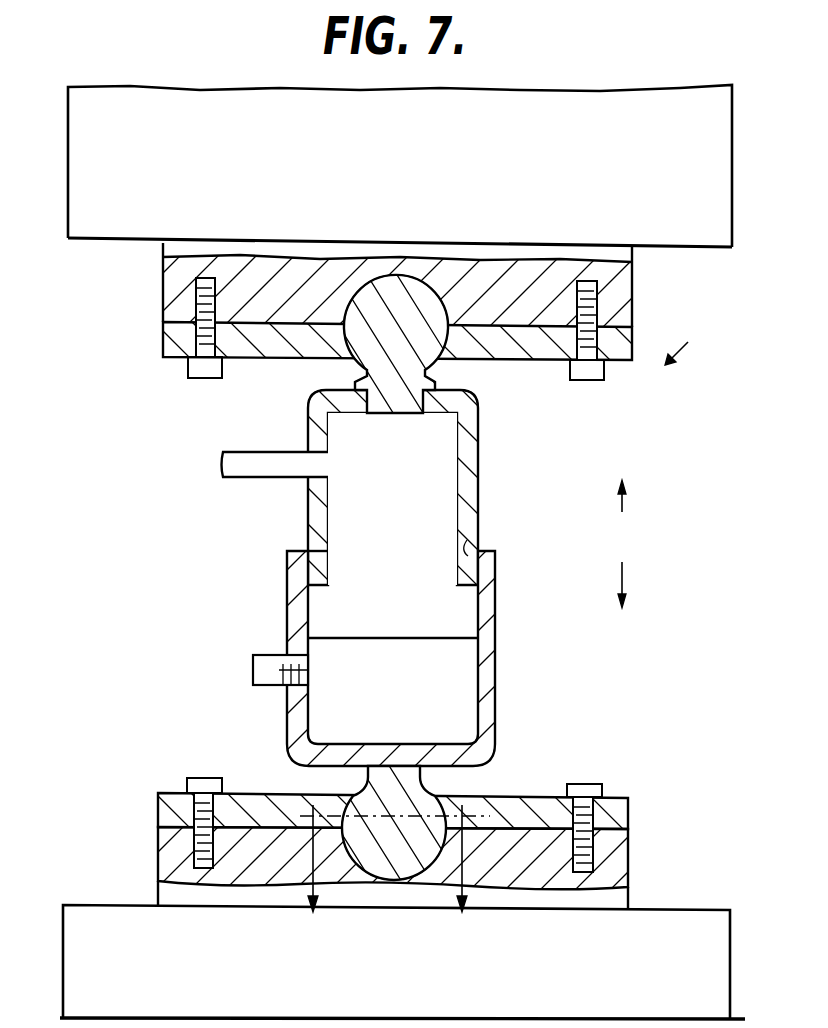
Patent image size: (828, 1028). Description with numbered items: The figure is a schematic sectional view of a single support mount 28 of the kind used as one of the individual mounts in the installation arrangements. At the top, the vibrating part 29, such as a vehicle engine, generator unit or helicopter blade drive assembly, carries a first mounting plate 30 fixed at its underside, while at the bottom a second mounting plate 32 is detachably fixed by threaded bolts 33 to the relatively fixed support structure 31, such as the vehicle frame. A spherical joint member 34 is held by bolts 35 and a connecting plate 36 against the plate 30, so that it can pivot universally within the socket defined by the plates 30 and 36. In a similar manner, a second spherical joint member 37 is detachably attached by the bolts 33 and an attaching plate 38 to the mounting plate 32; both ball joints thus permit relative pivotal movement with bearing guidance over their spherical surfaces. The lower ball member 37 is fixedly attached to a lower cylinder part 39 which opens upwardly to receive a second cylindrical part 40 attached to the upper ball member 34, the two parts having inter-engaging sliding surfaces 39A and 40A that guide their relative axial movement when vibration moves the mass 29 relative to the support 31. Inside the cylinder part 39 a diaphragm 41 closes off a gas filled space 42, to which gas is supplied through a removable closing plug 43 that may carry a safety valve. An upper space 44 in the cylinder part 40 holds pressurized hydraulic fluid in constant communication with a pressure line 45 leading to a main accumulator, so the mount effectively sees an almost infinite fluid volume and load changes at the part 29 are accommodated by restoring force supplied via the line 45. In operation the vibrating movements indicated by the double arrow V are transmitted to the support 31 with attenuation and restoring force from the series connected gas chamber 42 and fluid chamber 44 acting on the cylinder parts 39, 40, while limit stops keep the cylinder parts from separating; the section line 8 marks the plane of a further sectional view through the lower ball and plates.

The support mount 28 is at (685, 337).
The vibrating part 29 is at (410, 189).
The first mounting plate 30 is at (180, 278).
The support structure 31 is at (403, 981).
The second mounting plate 32 is at (162, 860).
The threaded bolts 33 is at (200, 778).
The spherical joint member 34 is at (360, 357).
The bolts 35 is at (197, 376).
The connecting plate 36 is at (168, 345).
The second spherical joint member 37 is at (445, 801).
The attaching plate 38 is at (165, 800).
The lower cylinder part 39 is at (490, 650).
The sliding surface 39A is at (478, 577).
The second cylindrical part 40 is at (478, 470).
The sliding surface 40A is at (482, 542).
The diaphragm 41 is at (425, 642).
The gas filled space 42 is at (458, 707).
The removable closing plug 43 is at (262, 673).
The upper space 44 is at (345, 440).
The pressure line 45 is at (240, 480).
The section line 8- 8 is at (395, 879).
The double arrow V is at (622, 544).